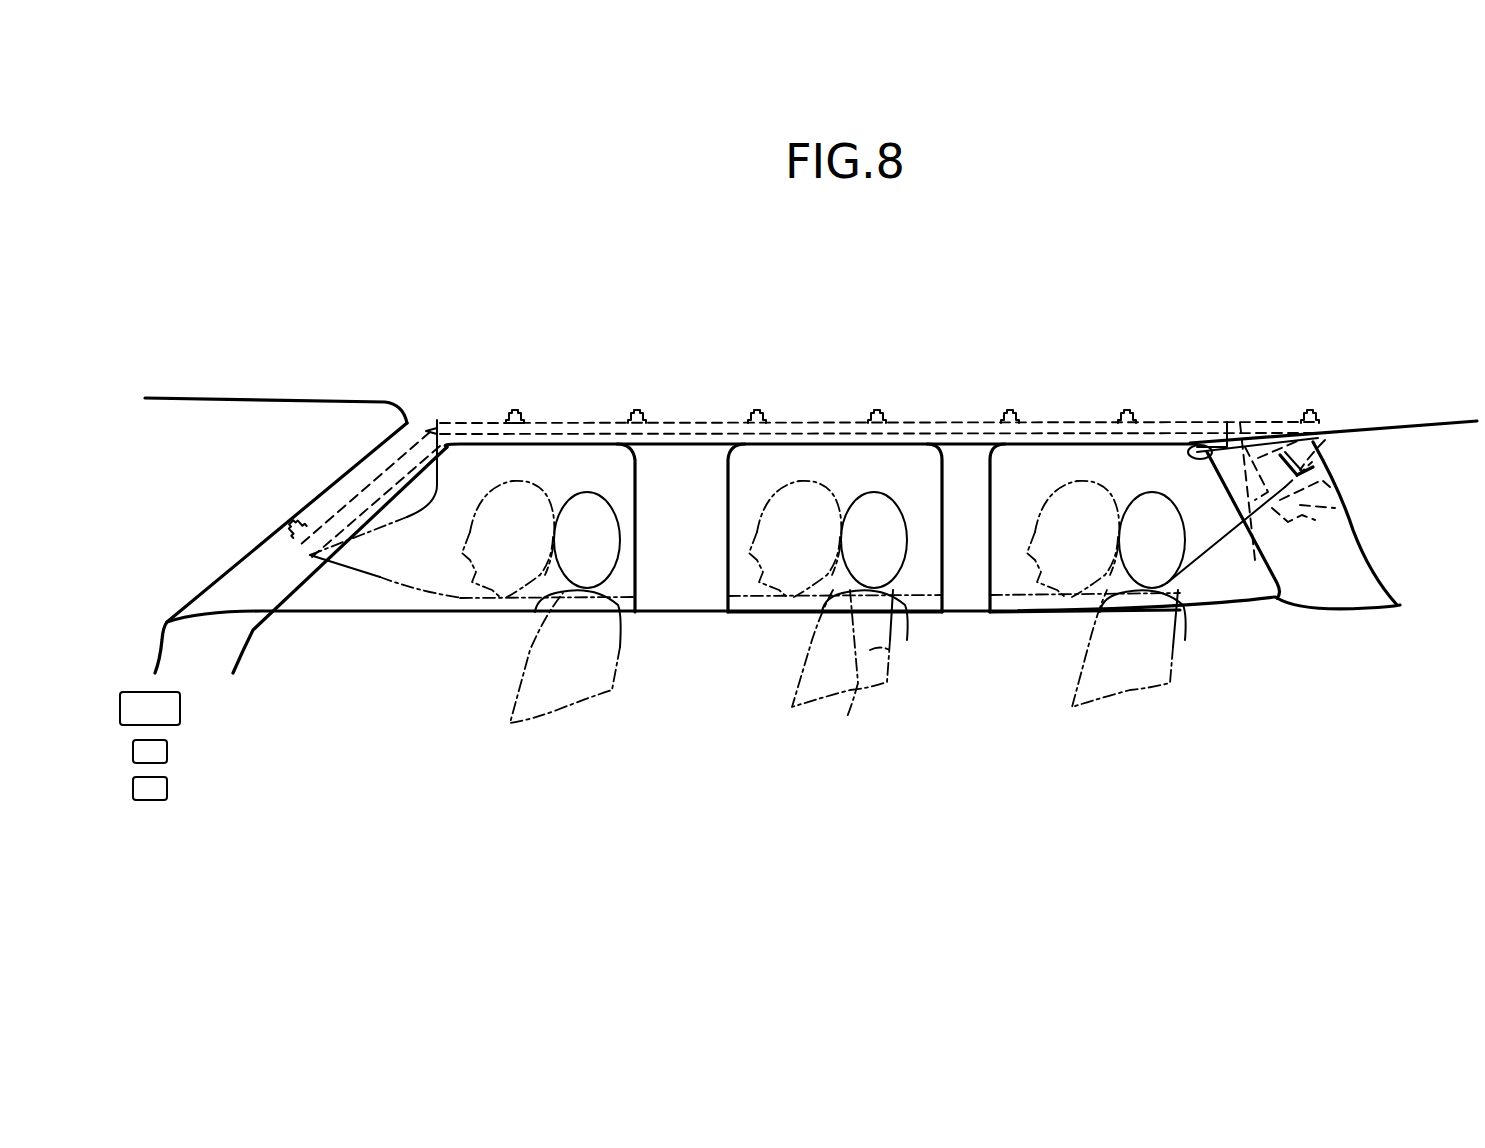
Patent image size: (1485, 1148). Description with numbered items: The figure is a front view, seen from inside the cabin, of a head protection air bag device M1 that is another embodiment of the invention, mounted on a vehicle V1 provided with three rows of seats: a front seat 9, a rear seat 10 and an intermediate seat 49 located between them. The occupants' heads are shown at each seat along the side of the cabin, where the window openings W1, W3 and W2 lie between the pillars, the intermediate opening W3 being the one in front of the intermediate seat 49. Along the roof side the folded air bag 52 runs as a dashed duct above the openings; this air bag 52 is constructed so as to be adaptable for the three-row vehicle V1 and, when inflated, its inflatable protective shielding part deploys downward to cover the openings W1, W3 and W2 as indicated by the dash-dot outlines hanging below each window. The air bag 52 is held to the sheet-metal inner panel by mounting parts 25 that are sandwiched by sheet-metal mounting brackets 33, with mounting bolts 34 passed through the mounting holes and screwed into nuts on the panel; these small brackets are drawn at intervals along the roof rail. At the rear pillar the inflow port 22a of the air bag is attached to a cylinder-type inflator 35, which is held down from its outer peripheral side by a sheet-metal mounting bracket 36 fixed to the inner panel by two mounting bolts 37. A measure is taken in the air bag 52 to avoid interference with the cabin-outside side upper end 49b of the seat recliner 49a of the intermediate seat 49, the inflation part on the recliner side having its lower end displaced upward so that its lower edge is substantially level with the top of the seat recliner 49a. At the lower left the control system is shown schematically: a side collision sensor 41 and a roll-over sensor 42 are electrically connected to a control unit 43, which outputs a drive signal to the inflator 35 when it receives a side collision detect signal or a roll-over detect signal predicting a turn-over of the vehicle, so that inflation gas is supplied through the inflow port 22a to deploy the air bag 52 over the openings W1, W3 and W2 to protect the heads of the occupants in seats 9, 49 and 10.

The vehicle V1 is at (293, 362).
The head protection air bag device M1 is at (1328, 358).
The mounting parts 25 is at (500, 417).
The mounting bolts 34 is at (512, 408).
The mounting brackets 33 is at (530, 416).
The air bag 52 is at (822, 415).
The mounting bolts 37 is at (1325, 440).
The inflow port 22a is at (1328, 478).
The inflator 35 is at (1337, 508).
The mounting bracket 36 is at (1255, 560).
The front seat 9 is at (503, 688).
The intermediate seat 49 is at (779, 695).
The seat recliner 49a is at (883, 648).
The cabin-outside side upper end 49b is at (840, 673).
The rear seat 10 is at (1068, 674).
The control unit 43 is at (180, 708).
The roll-over sensor 42 is at (167, 753).
The side collision sensor 41 is at (167, 790).
The window opening W1 is at (357, 603).
The intermediate opening W3 is at (738, 603).
The window opening W2 is at (1010, 603).